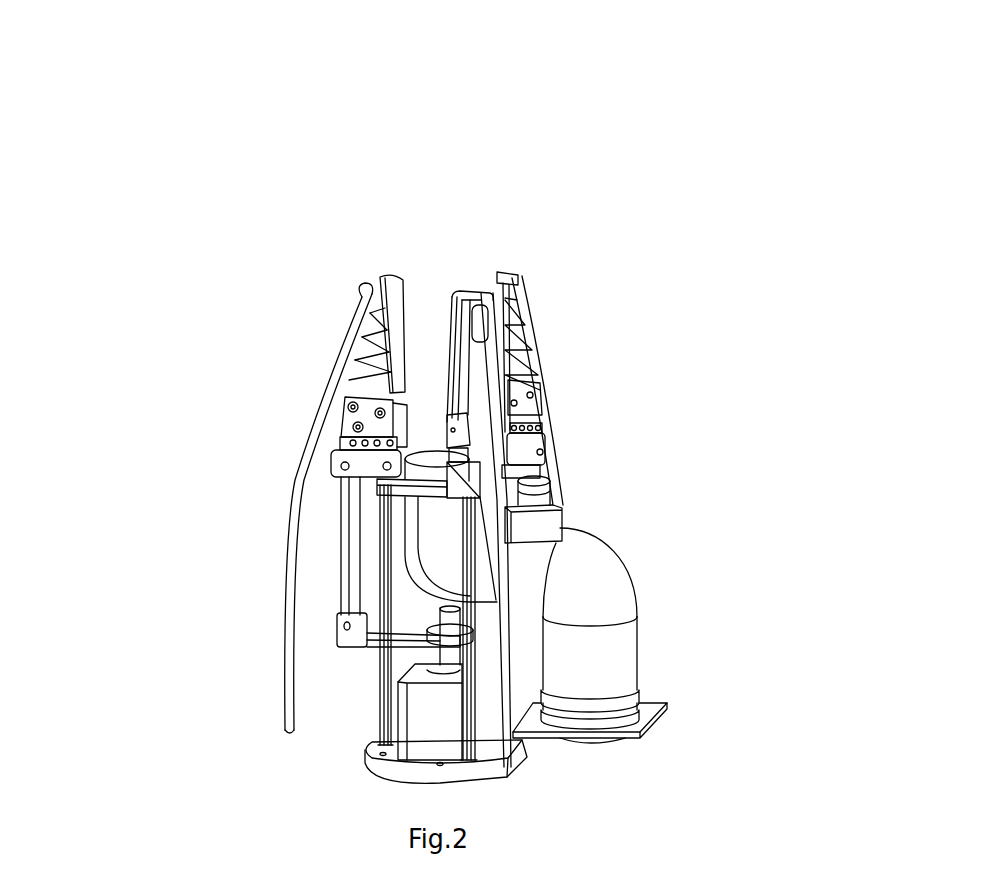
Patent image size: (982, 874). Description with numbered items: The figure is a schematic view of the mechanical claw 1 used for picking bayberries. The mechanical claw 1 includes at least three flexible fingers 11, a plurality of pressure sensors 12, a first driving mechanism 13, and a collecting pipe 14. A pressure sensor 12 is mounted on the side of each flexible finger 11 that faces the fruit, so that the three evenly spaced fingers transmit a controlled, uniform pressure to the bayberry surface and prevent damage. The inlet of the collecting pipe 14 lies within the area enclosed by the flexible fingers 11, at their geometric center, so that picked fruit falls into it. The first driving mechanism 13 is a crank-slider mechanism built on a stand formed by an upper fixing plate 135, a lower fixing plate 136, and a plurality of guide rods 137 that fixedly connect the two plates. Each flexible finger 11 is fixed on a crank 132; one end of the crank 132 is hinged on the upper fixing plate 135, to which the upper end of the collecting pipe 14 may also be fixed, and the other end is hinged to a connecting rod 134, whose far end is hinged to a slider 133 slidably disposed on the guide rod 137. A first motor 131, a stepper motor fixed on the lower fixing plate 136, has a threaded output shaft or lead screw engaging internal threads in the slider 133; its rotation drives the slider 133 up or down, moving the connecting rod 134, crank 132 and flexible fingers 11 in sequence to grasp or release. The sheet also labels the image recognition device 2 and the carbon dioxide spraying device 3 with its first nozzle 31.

The mechanical claw 1 is at (465, 415).
The image recognition device 2 is at (562, 502).
The carbon dioxide spraying device 3 is at (483, 327).
The flexible finger 11 is at (497, 275).
The pressure sensor 12 is at (507, 322).
The first driving mechanism 13 is at (543, 620).
The collecting pipe 14 is at (600, 545).
The first nozzle 31 is at (367, 285).
The first motor 131 is at (382, 722).
The crank 132 is at (348, 400).
The slider 133 is at (338, 623).
The connecting rod 134 is at (337, 503).
The upper fixing plate 135 is at (550, 452).
The lower fixing plate 136 is at (370, 760).
The guide rod 137 is at (430, 720).